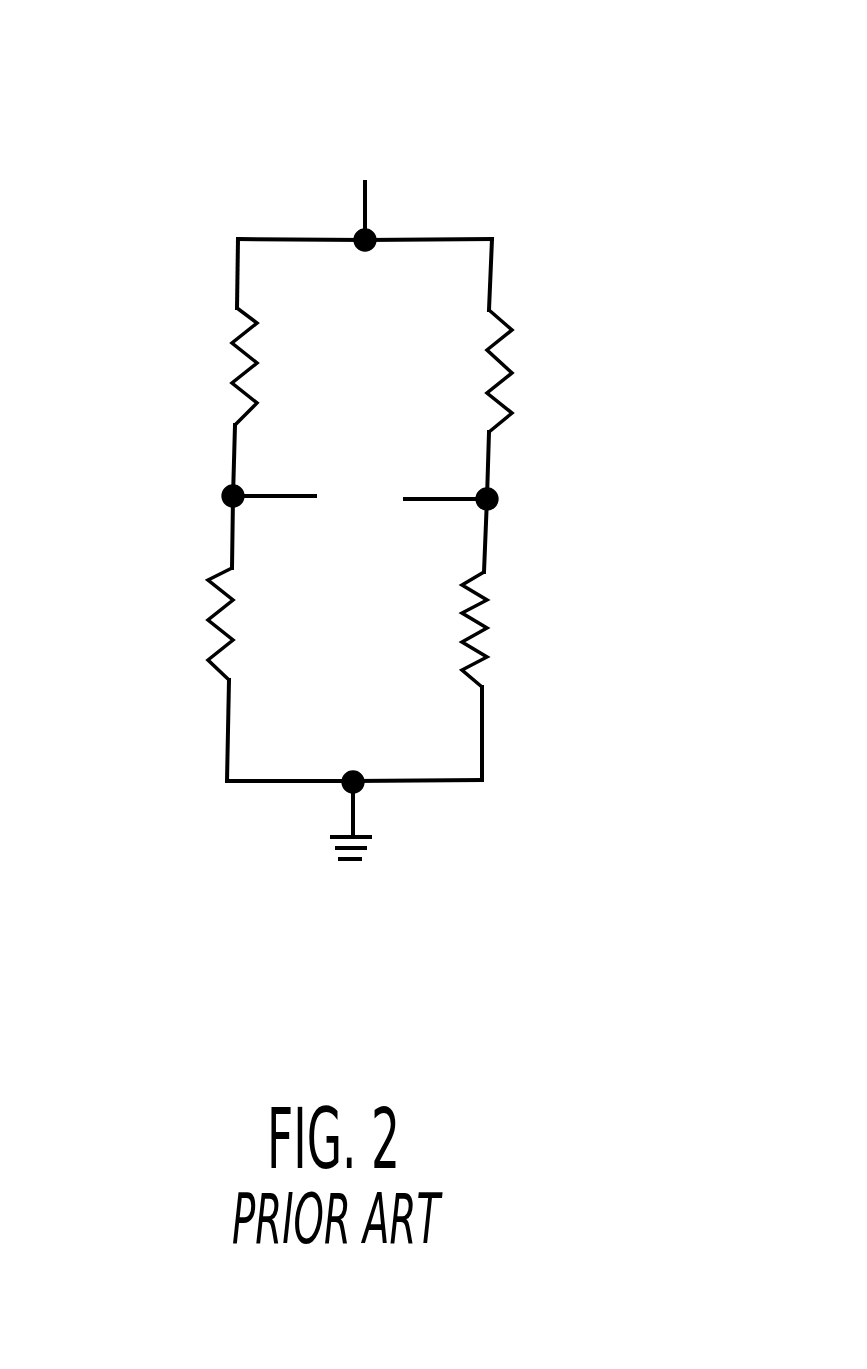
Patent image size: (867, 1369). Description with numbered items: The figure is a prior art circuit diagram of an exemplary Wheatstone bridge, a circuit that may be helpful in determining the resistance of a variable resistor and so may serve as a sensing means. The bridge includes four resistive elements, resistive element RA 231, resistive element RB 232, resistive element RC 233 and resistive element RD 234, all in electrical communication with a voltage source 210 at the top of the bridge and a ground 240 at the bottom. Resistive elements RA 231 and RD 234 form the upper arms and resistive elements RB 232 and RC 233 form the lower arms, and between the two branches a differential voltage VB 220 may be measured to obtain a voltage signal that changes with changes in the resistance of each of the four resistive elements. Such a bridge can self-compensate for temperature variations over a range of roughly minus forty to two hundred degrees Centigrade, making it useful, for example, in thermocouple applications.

The voltage source 210 is at (402, 103).
The bridge output node VB 220 is at (393, 478).
The resistive element RA 231 is at (237, 352).
The resistive element RB 232 is at (213, 618).
The resistive element RC 233 is at (483, 640).
The resistive element RD 234 is at (507, 377).
The ground 240 is at (377, 853).